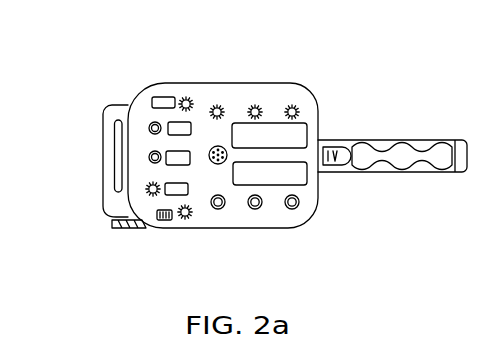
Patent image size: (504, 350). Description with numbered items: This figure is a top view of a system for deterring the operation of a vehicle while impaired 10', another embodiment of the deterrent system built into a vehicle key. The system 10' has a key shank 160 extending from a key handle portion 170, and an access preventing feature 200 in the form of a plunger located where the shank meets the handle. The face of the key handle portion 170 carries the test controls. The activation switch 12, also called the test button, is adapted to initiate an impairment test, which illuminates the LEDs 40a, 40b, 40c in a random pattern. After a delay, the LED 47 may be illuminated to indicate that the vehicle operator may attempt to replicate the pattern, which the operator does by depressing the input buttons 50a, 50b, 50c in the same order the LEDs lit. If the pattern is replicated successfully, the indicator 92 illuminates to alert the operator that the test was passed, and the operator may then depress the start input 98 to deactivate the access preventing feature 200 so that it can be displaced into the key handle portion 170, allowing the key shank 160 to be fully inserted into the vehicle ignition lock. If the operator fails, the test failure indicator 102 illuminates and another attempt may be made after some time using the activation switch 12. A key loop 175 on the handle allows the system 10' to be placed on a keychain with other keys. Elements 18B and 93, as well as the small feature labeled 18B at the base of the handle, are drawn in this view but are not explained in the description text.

The system for deterring the operation of a vehicle while impaired 10' is at (252, 152).
The key handle portion 170 is at (187, 83).
The LED 47 is at (186, 97).
The activation switch 12 is at (153, 113).
The start input 98 is at (145, 150).
The key loop 175 is at (117, 182).
The indicator 92 is at (140, 191).
The base member 18B is at (117, 226).
The test failure indicator 102 is at (186, 222).
The speaker 93 is at (214, 168).
The LED 40a is at (217, 106).
The LED 40b is at (258, 101).
The LED 40c is at (292, 101).
The input button 50a is at (222, 210).
The input button 50b is at (260, 213).
The input button 50c is at (297, 210).
The access preventing feature 200 is at (340, 153).
The key shank 160 is at (398, 152).